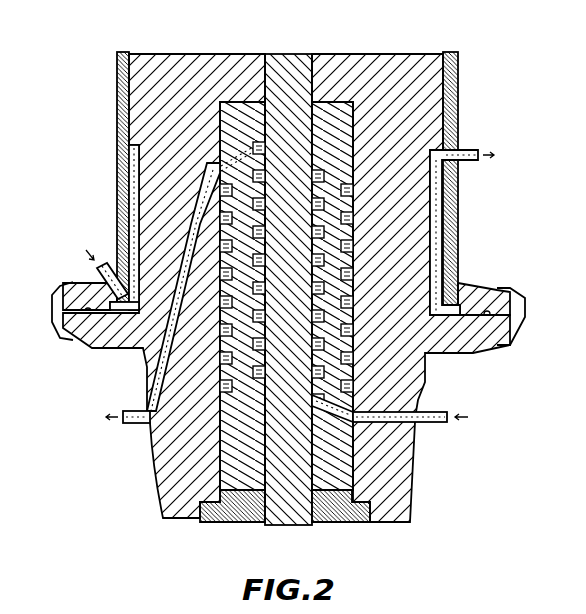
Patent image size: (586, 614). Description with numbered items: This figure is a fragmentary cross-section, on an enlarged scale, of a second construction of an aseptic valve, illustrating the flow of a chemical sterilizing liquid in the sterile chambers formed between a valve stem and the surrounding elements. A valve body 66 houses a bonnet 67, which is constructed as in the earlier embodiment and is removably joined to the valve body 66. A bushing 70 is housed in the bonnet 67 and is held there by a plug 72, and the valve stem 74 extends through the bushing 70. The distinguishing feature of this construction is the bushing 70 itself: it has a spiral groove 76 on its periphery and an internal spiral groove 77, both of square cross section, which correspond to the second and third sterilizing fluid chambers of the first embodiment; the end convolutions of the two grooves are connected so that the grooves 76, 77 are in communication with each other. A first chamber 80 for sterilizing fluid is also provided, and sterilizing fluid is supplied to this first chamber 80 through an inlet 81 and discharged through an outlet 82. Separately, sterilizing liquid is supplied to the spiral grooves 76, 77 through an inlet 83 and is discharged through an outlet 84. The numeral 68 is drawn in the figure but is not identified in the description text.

The valve body 66 is at (130, 88).
The bonnet 67 is at (433, 83).
The right housing body 68 is at (415, 246).
The bushing 70 is at (333, 110).
The plug 72 is at (348, 517).
The valve stem 74 is at (302, 67).
The spiral groove 76 is at (346, 252).
The internal spiral groove 77 is at (316, 182).
The first chamber 80 is at (433, 184).
The inlet 81 is at (97, 270).
The outlet 82 is at (468, 150).
The inlet 83 is at (428, 423).
The outlet 84 is at (138, 424).